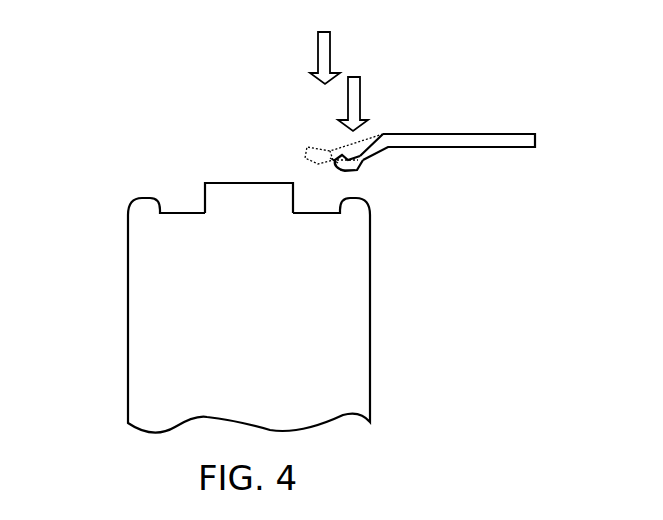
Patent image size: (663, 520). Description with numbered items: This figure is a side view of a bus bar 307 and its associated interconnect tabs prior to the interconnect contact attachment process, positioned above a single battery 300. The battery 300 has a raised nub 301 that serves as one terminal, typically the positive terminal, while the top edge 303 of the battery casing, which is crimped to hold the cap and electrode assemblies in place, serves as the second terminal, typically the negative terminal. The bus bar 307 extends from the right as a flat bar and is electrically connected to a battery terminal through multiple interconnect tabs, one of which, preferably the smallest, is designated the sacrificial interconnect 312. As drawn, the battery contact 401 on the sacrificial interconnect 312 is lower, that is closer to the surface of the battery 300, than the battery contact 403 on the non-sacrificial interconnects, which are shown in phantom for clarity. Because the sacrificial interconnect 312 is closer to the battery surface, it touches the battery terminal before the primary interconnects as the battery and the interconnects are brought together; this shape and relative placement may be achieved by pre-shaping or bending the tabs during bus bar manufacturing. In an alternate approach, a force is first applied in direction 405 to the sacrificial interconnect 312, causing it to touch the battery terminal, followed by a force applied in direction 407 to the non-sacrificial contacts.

The battery 300 is at (270, 328).
The raised nub 301 is at (215, 193).
The top edge 303 is at (140, 200).
The bus bar 307 is at (460, 142).
The sacrificial interconnect 312 is at (358, 163).
The battery contact 401 is at (355, 178).
The battery contact 403 is at (318, 168).
The direction 405 is at (363, 107).
The direction 407 is at (318, 62).